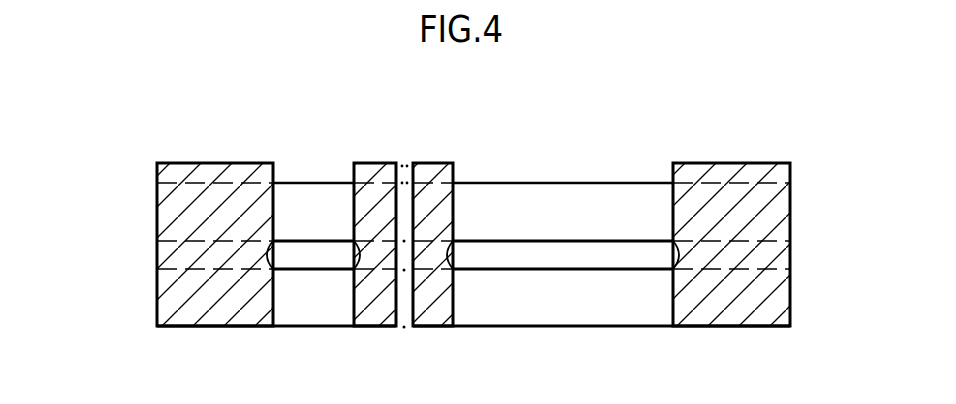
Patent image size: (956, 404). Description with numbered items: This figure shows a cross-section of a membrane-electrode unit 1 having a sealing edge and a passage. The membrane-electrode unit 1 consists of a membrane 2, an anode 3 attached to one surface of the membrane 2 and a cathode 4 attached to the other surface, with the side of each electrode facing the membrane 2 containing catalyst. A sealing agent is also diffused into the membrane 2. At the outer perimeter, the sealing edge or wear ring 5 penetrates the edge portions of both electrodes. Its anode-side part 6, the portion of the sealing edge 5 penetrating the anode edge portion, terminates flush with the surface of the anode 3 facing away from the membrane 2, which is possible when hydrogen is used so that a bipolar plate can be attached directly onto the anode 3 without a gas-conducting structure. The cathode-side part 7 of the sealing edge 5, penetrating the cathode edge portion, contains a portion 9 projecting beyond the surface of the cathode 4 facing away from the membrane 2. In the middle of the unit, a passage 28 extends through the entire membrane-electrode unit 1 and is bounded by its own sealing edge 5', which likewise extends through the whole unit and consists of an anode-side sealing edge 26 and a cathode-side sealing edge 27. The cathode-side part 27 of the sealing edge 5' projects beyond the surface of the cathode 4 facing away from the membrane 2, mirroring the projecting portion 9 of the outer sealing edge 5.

The membrane-electrode unit 1 is at (613, 160).
The membrane 2 is at (770, 255).
The anode 3 is at (583, 293).
The cathode 4 is at (592, 207).
The sealing edge 5 is at (473, 210).
The sealing edge of the passage 5' is at (403, 210).
The anode-side part of the sealing edge 6 is at (197, 302).
The cathode-side part of the sealing edge 7 is at (193, 222).
The projecting portion 9 is at (187, 168).
The anode-side sealing edge 26 is at (370, 307).
The cathode-side sealing edge 27 is at (383, 215).
The passage 28 is at (406, 316).